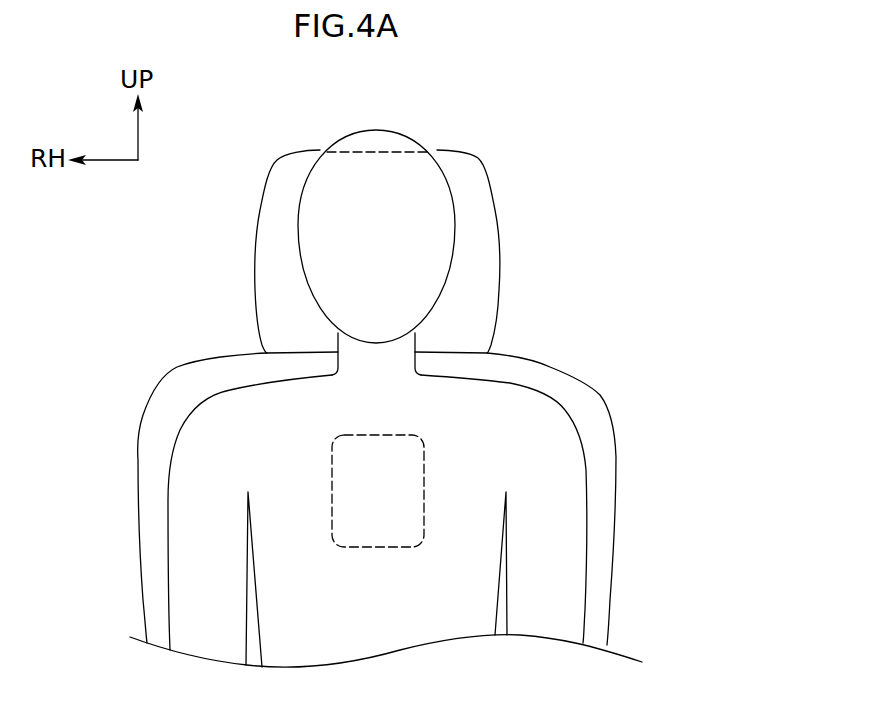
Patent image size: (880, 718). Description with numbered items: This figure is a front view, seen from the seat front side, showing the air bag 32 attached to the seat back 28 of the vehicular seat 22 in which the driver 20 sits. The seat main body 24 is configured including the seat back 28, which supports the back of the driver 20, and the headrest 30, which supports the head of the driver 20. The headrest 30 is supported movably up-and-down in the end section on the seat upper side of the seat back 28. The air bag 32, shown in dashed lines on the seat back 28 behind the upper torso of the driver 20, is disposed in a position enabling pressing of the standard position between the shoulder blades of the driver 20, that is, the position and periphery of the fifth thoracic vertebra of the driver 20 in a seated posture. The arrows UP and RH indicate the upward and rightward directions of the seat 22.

The driver 20 is at (373, 140).
The vehicular seat 22 is at (455, 204).
The seat main body 24 is at (534, 221).
The seat back 28 is at (602, 408).
The headrest 30 is at (470, 221).
The air bag 32 is at (425, 453).